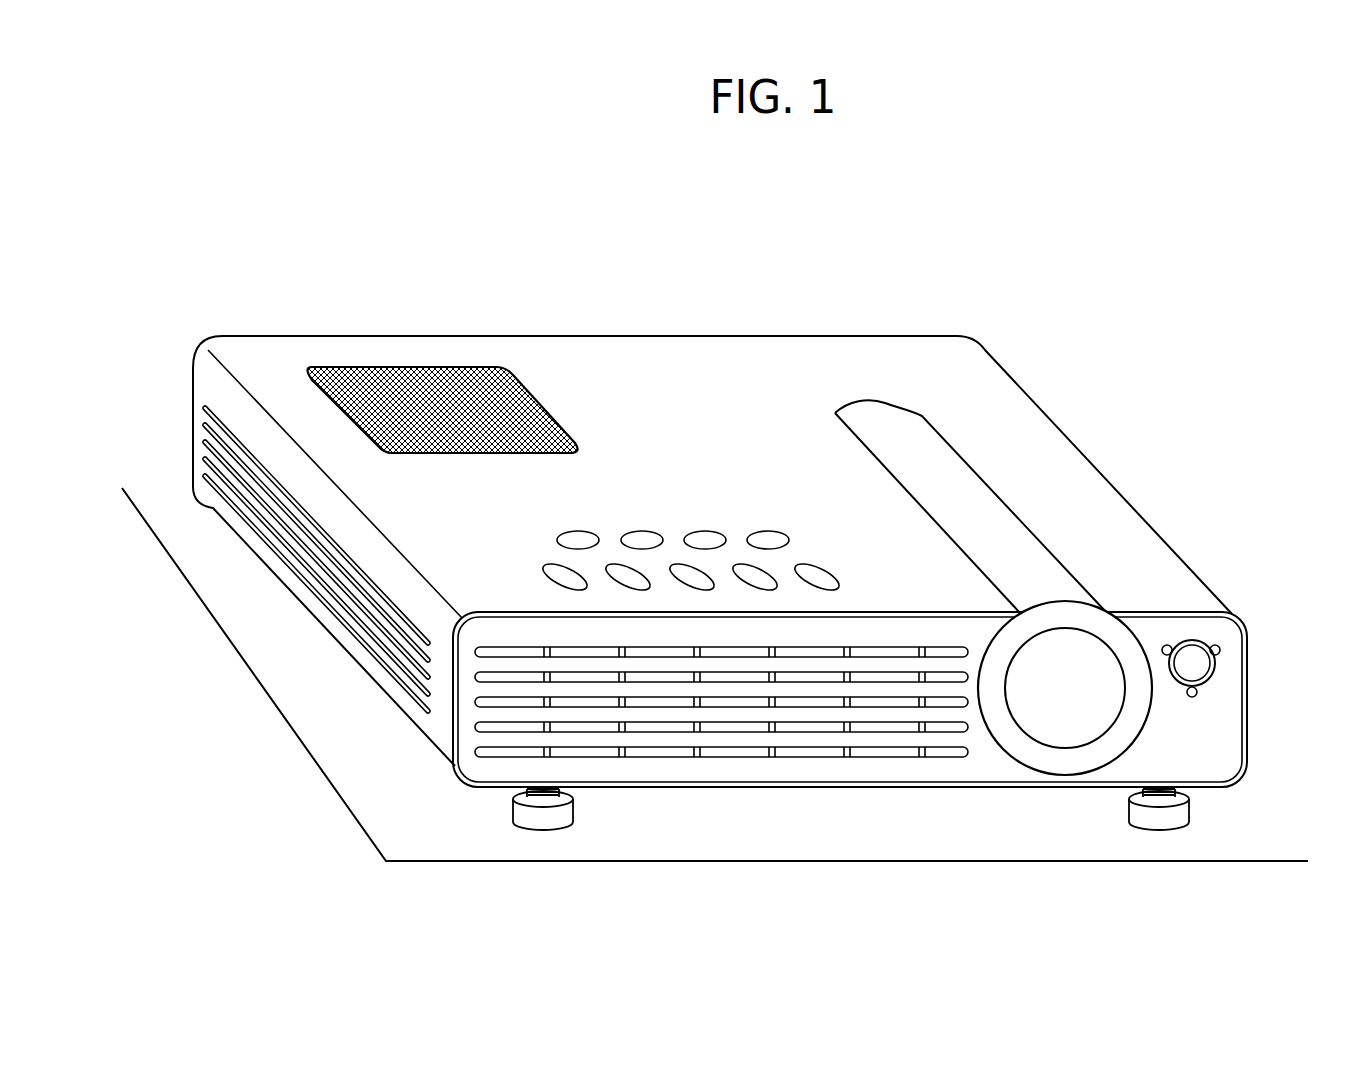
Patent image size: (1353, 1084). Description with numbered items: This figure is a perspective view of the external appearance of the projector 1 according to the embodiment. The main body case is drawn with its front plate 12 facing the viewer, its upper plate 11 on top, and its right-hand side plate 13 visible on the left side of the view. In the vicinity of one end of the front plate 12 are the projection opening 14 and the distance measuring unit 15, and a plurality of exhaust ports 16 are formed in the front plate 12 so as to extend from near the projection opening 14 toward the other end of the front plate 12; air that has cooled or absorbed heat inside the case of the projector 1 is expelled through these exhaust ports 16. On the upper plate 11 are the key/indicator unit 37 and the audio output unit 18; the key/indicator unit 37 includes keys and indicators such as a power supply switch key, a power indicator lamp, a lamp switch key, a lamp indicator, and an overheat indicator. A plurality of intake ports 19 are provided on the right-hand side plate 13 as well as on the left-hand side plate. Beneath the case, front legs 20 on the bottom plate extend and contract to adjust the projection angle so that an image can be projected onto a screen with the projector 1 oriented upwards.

The projector 1 is at (286, 298).
The upper plate 11 is at (697, 395).
The front plate 12 is at (843, 770).
The right-hand side plate 13 is at (313, 601).
The projection opening 14 is at (1053, 727).
The distance measuring unit 15 is at (1198, 665).
The exhaust ports 16 is at (677, 758).
The audio output unit 18 is at (444, 396).
The intake ports 19 is at (231, 489).
The front legs 20 is at (560, 828).
The key/indicator unit 37 is at (636, 492).